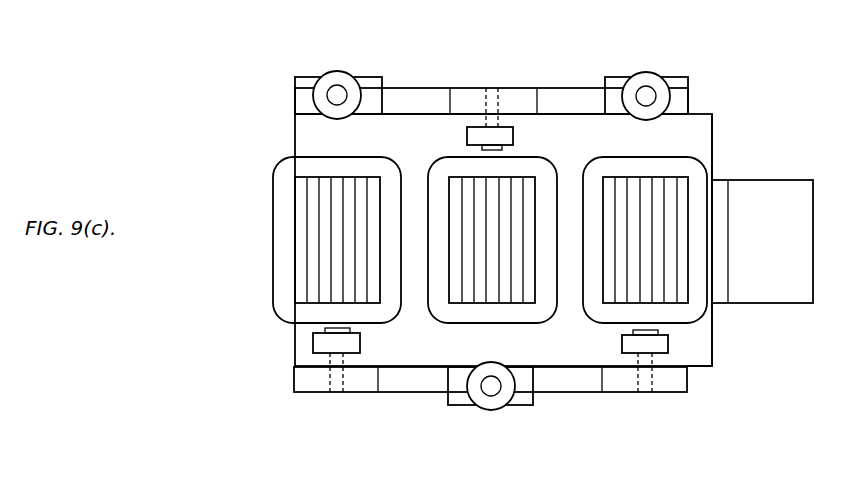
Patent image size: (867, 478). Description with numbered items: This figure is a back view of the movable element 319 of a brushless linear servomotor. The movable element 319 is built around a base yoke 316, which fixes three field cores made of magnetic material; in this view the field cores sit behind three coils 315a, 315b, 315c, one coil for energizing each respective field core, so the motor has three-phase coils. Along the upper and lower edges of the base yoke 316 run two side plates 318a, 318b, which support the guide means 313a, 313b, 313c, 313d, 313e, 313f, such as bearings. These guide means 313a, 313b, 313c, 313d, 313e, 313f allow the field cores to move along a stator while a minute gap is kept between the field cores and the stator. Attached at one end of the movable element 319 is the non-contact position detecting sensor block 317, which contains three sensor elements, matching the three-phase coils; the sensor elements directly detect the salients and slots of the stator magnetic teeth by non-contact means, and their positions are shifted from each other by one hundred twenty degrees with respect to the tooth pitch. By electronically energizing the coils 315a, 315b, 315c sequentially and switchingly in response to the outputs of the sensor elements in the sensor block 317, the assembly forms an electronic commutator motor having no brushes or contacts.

The guide means 313a is at (318, 343).
The guide means 313b is at (490, 403).
The guide means 313c is at (662, 355).
The guide means 313d is at (332, 70).
The guide means 313e is at (477, 132).
The guide means 313f is at (647, 78).
The coil 315a is at (288, 162).
The coil 315b is at (448, 160).
The coil 315c is at (702, 157).
The base yoke 316 is at (697, 117).
The non-contact position detecting sensor block 317 is at (772, 192).
The side plate 318a is at (583, 382).
The side plate 318b is at (572, 88).
The movable element 319 is at (693, 365).